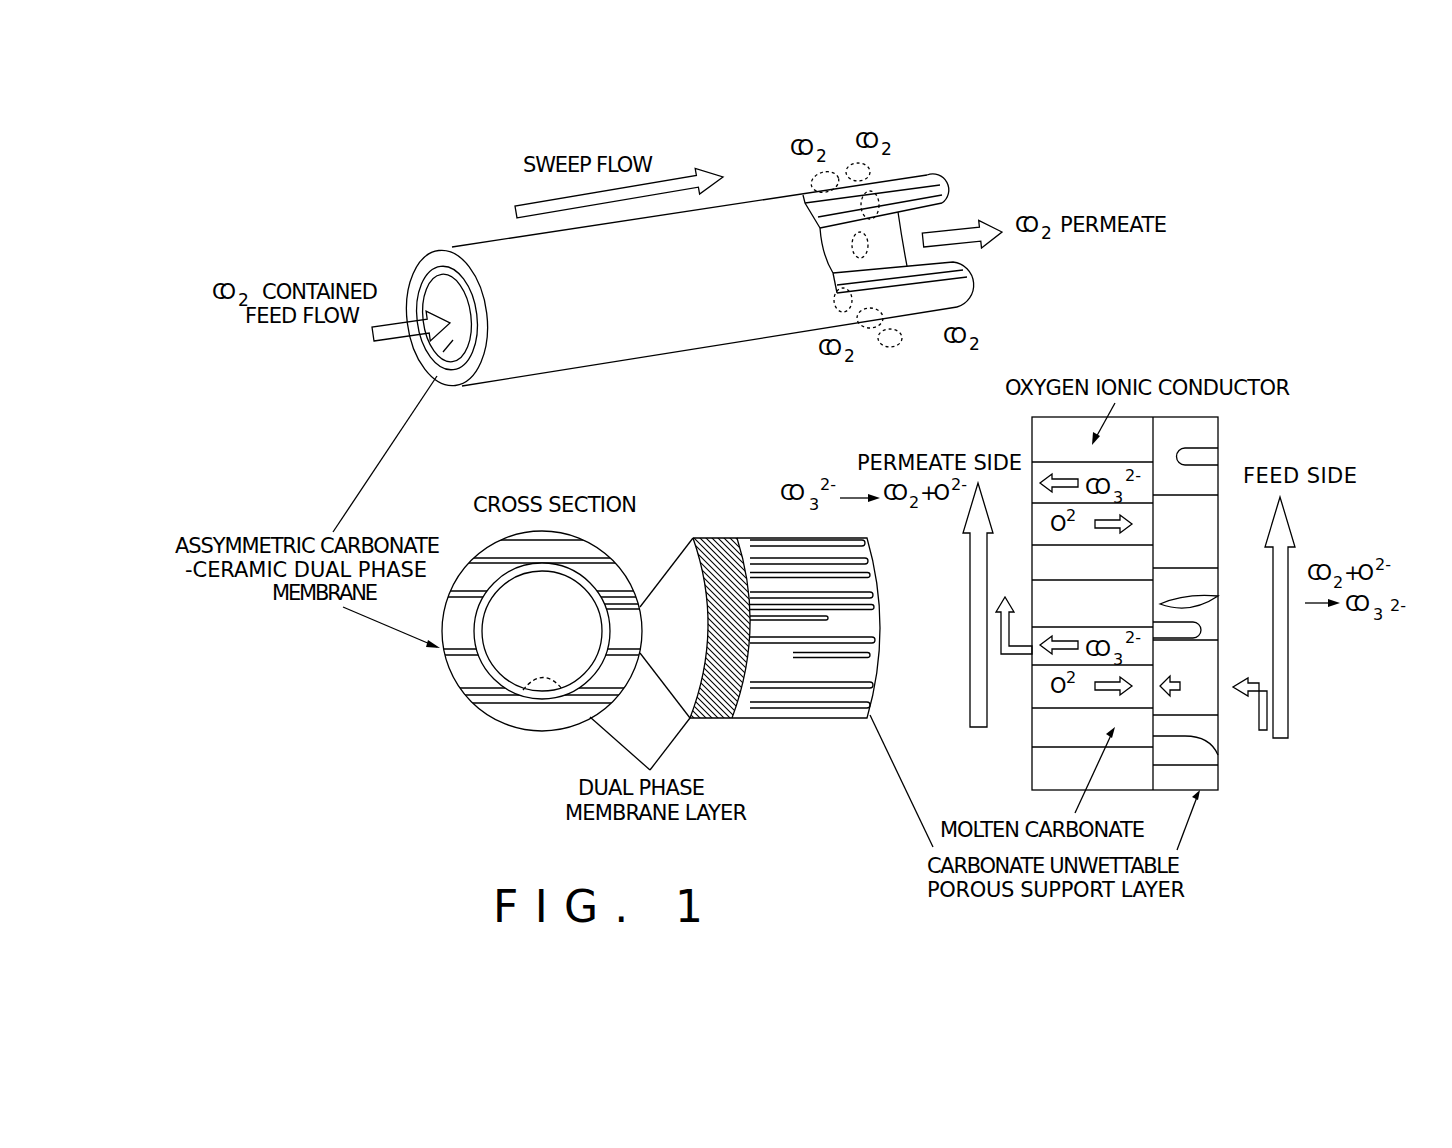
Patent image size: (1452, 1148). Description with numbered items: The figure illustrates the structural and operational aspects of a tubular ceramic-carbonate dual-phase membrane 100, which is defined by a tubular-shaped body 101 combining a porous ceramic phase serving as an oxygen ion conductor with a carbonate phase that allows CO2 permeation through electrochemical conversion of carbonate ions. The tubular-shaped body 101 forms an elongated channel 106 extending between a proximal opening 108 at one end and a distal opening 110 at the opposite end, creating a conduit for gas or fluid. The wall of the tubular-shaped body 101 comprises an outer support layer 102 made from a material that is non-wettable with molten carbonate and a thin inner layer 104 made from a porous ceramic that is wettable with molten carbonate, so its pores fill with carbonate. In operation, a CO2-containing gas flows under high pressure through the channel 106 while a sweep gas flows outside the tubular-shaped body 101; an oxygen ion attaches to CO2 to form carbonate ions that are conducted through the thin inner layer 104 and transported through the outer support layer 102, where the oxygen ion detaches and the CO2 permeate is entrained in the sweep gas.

The tubular ceramic-carbonate dual-phase membrane 100 is at (923, 143).
The tubular-shaped body 101 is at (762, 199).
The outer support layer 102 is at (600, 363).
The thin inner layer 104 is at (427, 270).
The channel 106 is at (437, 364).
The proximal opening 108 is at (420, 357).
The distal opening 110 is at (971, 202).